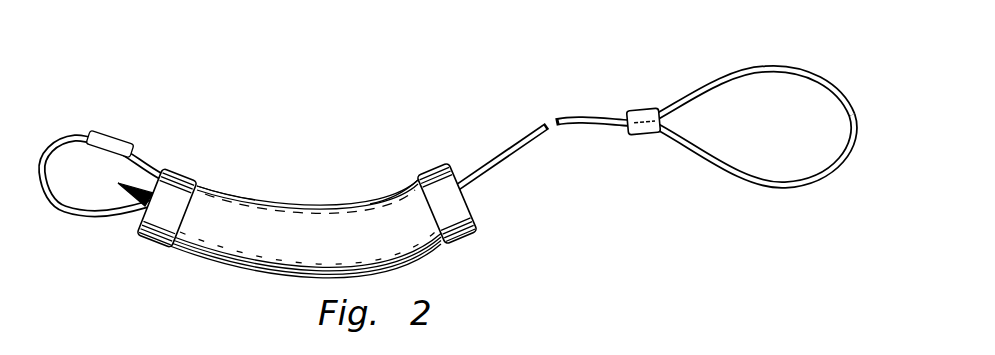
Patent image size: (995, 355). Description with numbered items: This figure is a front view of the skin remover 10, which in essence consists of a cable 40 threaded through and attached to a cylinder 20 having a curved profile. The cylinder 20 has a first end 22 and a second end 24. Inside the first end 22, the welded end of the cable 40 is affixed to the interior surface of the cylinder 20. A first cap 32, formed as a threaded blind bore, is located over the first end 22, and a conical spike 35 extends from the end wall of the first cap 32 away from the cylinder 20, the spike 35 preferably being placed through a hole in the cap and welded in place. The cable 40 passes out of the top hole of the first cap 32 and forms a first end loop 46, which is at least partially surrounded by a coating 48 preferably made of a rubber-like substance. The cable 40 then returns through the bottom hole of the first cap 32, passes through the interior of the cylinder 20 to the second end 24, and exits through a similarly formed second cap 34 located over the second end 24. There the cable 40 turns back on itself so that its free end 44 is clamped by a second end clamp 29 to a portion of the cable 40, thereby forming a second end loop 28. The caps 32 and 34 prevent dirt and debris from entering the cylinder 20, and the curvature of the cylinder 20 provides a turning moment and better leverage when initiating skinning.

The skin remover 10 is at (352, 91).
The cylinder 20 is at (282, 253).
The first end 22 is at (205, 188).
The second end 24 is at (412, 187).
The second end loop 28 is at (753, 67).
The second end clamp 29 is at (645, 112).
The first cap 32 is at (177, 170).
The second cap 34 is at (428, 173).
The conical spike 35 is at (130, 200).
The cable 40 is at (482, 178).
The free end 44 is at (760, 182).
The first end loop 46 is at (92, 218).
The coating 48 is at (100, 137).